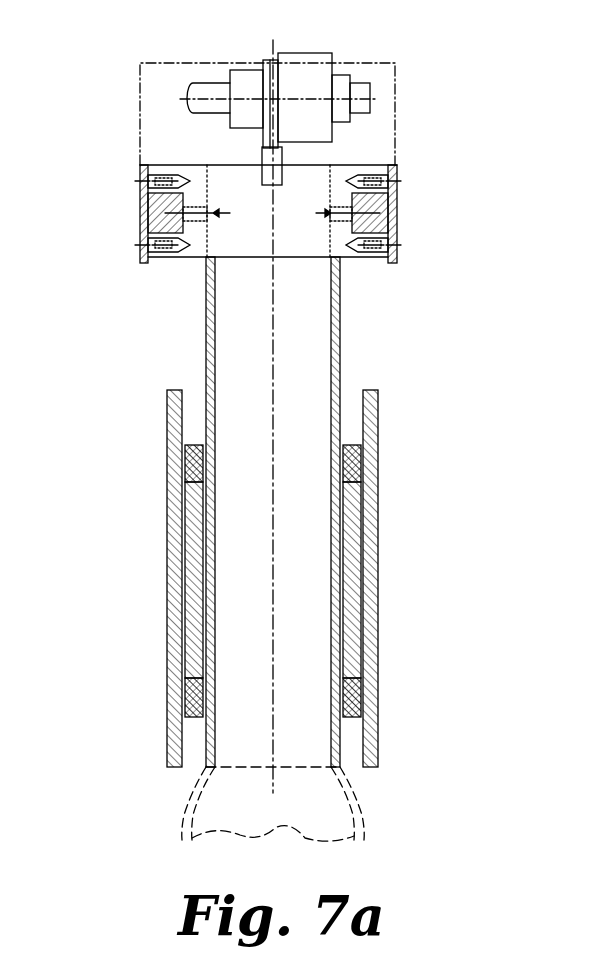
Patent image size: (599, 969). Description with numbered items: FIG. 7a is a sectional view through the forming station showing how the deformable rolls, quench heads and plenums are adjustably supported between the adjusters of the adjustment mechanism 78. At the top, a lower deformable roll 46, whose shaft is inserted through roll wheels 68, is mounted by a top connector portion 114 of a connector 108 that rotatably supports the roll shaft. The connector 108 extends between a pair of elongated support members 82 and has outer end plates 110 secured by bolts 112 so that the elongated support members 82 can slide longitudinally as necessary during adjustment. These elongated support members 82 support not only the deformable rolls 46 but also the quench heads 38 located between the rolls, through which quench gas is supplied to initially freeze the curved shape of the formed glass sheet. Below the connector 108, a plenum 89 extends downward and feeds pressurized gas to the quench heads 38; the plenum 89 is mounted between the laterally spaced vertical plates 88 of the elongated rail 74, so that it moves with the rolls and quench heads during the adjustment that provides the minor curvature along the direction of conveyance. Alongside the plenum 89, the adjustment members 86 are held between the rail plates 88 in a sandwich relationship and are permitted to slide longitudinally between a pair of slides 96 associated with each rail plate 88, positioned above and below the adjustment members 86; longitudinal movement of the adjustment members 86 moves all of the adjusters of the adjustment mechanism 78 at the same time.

The lower deformable roll 46 is at (355, 48).
The roll wheel 68 is at (307, 53).
The quench head 38 is at (395, 122).
The connector 108 is at (222, 178).
The top connector portion 114 is at (282, 148).
The bolts 112 is at (140, 180).
The elongated support members 82 is at (148, 212).
The outer end plates 110 is at (140, 222).
The plenum 89 is at (340, 325).
The adjustment mechanism 78 is at (392, 432).
The elongated rail 74 is at (166, 573).
The vertical plates 88 is at (175, 484).
The adjustment member 86 is at (192, 608).
The slides 96 is at (187, 462).